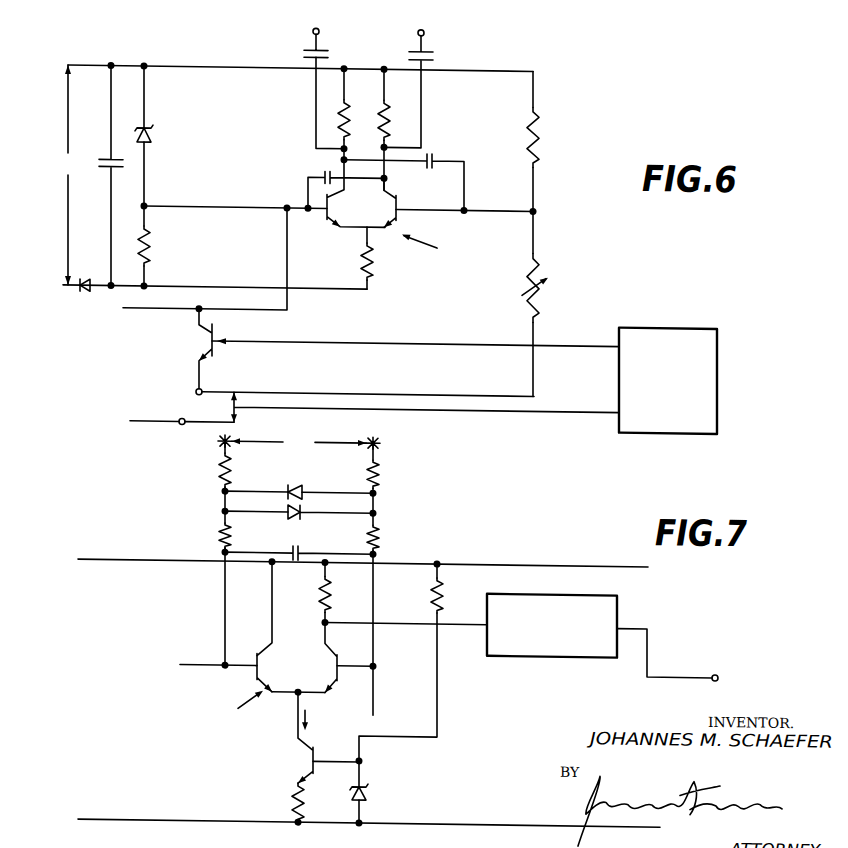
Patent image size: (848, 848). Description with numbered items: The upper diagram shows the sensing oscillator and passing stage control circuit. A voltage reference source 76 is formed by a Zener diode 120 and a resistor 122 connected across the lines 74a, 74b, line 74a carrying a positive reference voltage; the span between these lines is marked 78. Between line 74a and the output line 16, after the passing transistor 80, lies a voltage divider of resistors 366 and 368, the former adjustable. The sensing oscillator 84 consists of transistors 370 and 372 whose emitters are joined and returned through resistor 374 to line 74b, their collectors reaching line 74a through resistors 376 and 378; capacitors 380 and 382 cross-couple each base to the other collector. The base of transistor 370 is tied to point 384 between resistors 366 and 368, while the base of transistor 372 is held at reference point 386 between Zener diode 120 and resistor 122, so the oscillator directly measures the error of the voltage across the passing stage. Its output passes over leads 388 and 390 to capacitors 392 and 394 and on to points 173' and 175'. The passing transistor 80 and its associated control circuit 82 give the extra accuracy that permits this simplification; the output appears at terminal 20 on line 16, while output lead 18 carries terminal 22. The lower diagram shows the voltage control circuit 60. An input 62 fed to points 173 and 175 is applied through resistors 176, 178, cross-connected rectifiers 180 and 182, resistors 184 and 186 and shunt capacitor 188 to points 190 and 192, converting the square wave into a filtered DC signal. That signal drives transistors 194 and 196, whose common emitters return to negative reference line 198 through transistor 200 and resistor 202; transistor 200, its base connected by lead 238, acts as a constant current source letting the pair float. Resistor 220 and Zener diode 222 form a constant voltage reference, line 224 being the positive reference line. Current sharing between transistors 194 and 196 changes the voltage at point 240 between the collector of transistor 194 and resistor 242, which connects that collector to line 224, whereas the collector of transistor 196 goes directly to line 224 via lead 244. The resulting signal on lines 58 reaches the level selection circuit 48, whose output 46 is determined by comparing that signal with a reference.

In FIG. 6, the line 74a is at (230, 61).
In FIG. 6, the voltage reference source 76 is at (147, 58).
In FIG. 6, the supply voltage 78 is at (69, 175).
In FIG. 6, the Zener diode 120 is at (150, 129).
In FIG. 6, the reference point 386 is at (146, 202).
In FIG. 6, the resistor 122 is at (152, 252).
In FIG. 6, the line 74b is at (227, 284).
In FIG. 6, the output line 16 is at (140, 307).
In FIG. 6, the passing transistor 80 is at (207, 338).
In FIG. 6, the output terminal 20 is at (196, 389).
In FIG. 6, the control circuit 82 is at (668, 426).
In FIG. 6, the output lead 18 is at (137, 421).
In FIG. 6, the terminal 22 is at (182, 423).
In FIG. 6, the resistor 368 is at (540, 124).
In FIG. 6, the point 384 is at (538, 205).
In FIG. 6, the adjustable resistor 366 is at (524, 268).
In FIG. 6, the point 175' is at (343, 17).
In FIG. 6, the capacitor 394 is at (306, 50).
In FIG. 6, the lead 390 is at (312, 96).
In FIG. 6, the resistor 378 is at (346, 100).
In FIG. 6, the resistor 376 is at (406, 107).
In FIG. 6, the lead 388 is at (424, 109).
In FIG. 6, the point 173' is at (451, 20).
In FIG. 6, the capacitor 392 is at (431, 49).
In FIG. 6, the capacitor 380 is at (435, 148).
In FIG. 6, the capacitor 382 is at (323, 168).
In FIG. 6, the transistor 372 is at (356, 194).
In FIG. 6, the transistor 370 is at (392, 212).
In FIG. 6, the resistor 374 is at (377, 262).
In FIG. 6, the sensing oscillator 84 is at (431, 248).
In FIG. 7, the point 175 is at (254, 430).
In FIG. 7, the point 173 is at (396, 441).
In FIG. 7, the input 62 is at (299, 444).
In FIG. 7, the resistor 178 is at (220, 475).
In FIG. 7, the resistor 186 is at (220, 532).
In FIG. 7, the resistor 176 is at (380, 469).
In FIG. 7, the resistor 184 is at (380, 530).
In FIG. 7, the rectifier 180 is at (303, 485).
In FIG. 7, the rectifier 182 is at (287, 507).
In FIG. 7, the shunt capacitor 188 is at (301, 545).
In FIG. 7, the positive reference line 224 is at (140, 552).
In FIG. 7, the lead 244 is at (270, 603).
In FIG. 7, the transistor 194 is at (330, 656).
In FIG. 7, the transistor 196 is at (308, 657).
In FIG. 7, the point 192 is at (222, 665).
In FIG. 7, the point 190 is at (377, 662).
In FIG. 7, the resistor 242 is at (329, 590).
In FIG. 7, the point 240 is at (323, 619).
In FIG. 7, the resistor 220 is at (443, 581).
In FIG. 7, the lines 58 is at (468, 622).
In FIG. 7, the level selection circuit 48 is at (617, 591).
In FIG. 7, the output 46 is at (652, 641).
In FIG. 7, the lead 238 is at (333, 752).
In FIG. 7, the transistor 200 is at (310, 755).
In FIG. 7, the resistor 202 is at (294, 797).
In FIG. 7, the Zener diode 222 is at (368, 784).
In FIG. 7, the negative reference voltage line 198 is at (176, 817).
In FIG. 7, the voltage control circuit 60 is at (242, 714).